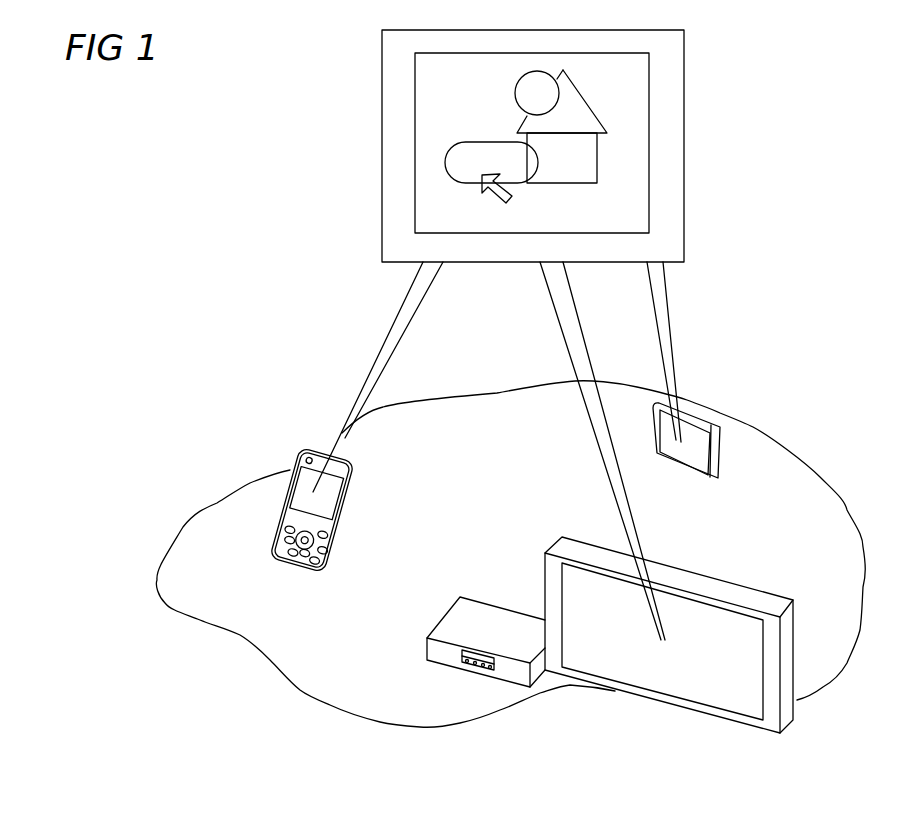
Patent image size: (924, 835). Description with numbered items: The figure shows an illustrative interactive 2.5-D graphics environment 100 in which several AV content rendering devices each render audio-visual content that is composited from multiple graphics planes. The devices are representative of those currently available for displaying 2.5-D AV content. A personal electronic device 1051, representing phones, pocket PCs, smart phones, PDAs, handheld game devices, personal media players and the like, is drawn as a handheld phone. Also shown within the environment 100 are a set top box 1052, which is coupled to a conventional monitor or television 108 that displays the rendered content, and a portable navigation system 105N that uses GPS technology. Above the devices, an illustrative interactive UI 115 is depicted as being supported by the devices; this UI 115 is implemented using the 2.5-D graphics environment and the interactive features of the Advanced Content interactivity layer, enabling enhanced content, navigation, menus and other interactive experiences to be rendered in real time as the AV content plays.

The interactive 2.5-D graphics environment 100 is at (228, 630).
The personal electronic device 1051 is at (300, 573).
The set top box 1052 is at (427, 647).
The portable navigation system 105N is at (712, 483).
The television 108 is at (760, 731).
The interactive UI 115 is at (648, 127).